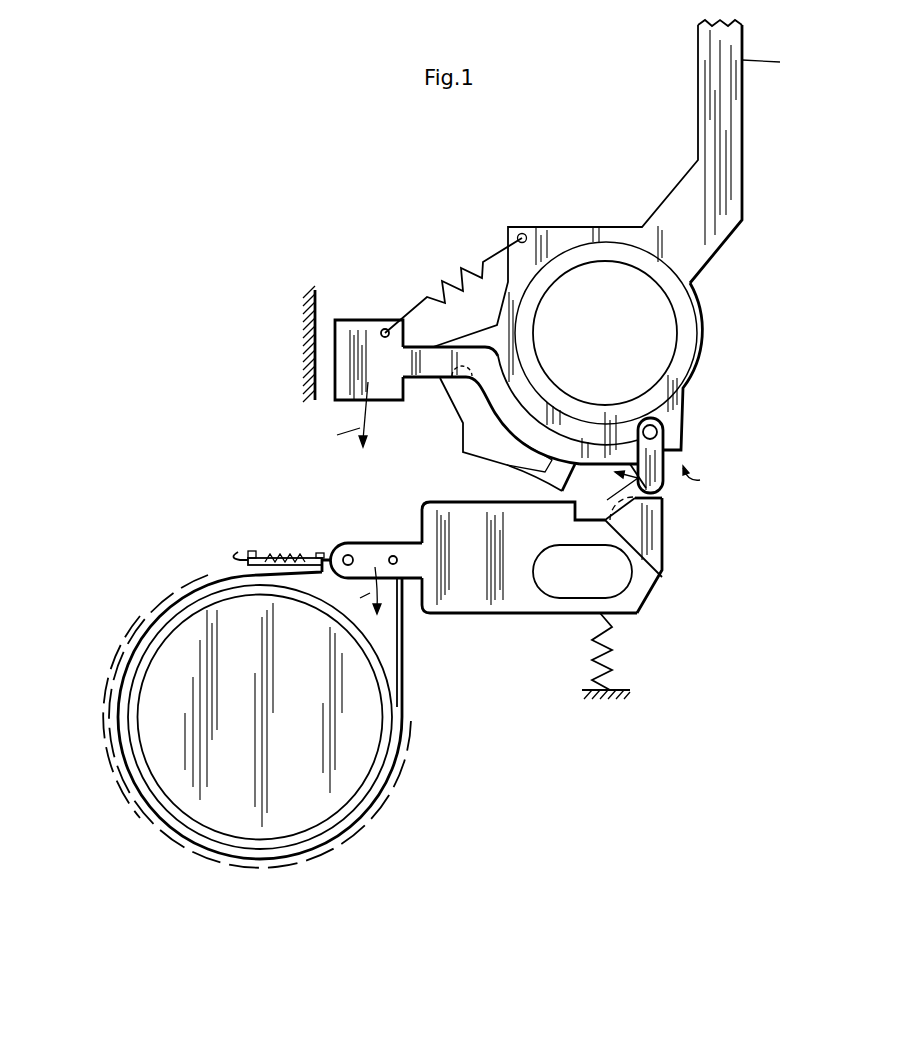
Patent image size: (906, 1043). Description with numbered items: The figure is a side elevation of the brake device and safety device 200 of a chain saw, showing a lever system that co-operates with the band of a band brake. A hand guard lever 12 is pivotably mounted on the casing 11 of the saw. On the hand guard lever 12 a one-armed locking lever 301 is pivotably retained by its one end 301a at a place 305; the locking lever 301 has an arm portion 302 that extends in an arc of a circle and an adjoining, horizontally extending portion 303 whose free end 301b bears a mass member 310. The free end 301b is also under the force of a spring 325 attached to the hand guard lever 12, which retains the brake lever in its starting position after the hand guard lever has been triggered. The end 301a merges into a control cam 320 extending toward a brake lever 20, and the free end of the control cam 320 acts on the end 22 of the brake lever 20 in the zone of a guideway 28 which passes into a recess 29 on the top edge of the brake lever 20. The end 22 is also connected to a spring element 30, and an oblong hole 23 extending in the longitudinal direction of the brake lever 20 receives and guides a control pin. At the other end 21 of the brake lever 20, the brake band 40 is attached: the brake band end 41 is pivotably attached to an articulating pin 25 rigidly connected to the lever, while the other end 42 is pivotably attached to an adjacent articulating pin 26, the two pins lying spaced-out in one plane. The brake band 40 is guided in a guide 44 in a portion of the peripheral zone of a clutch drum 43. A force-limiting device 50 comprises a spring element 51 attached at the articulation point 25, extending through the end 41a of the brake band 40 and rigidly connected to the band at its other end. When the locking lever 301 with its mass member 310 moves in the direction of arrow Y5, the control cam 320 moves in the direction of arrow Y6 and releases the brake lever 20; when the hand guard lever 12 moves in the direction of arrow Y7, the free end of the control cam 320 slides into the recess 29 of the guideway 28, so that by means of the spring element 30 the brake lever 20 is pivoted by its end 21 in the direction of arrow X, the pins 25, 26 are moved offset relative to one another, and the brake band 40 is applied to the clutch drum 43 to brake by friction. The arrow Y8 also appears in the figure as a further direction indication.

The casing 11 is at (312, 332).
The hand guard lever 12 is at (728, 138).
The brake lever 20 is at (508, 590).
The end of the brake lever 21 is at (363, 558).
The end of the brake lever 22 is at (645, 605).
The oblong hole 23 is at (590, 590).
The articulating pin 25 is at (346, 556).
The articulating pin 26 is at (395, 565).
The guideway 28 is at (648, 498).
The recess 29 is at (645, 555).
The spring element 30 is at (613, 682).
The brake band 40 is at (113, 678).
The brake band end 41 is at (182, 585).
The end of the brake band 41a is at (320, 555).
The brake band end 42 is at (227, 567).
The clutch drum 43 is at (185, 783).
The guide 44 is at (115, 777).
The force-limiting device 50 is at (267, 545).
The spring element 51 is at (284, 553).
The safety device 200 is at (435, 458).
The locking lever 301 is at (520, 449).
The end of the locking lever 301a is at (657, 458).
The free end of the locking lever 301b is at (410, 357).
The arm portion 302 is at (598, 452).
The horizontally extending portion 303 is at (447, 357).
The place 305 is at (657, 428).
The mass member 310 is at (353, 330).
The control cam 320 is at (663, 493).
The spring 325 is at (443, 278).
The arrow X is at (361, 590).
The arrow Y5 is at (335, 416).
The arrow Y6 is at (702, 478).
The arrow Y7 is at (777, 70).
The direction Y8 is at (608, 496).